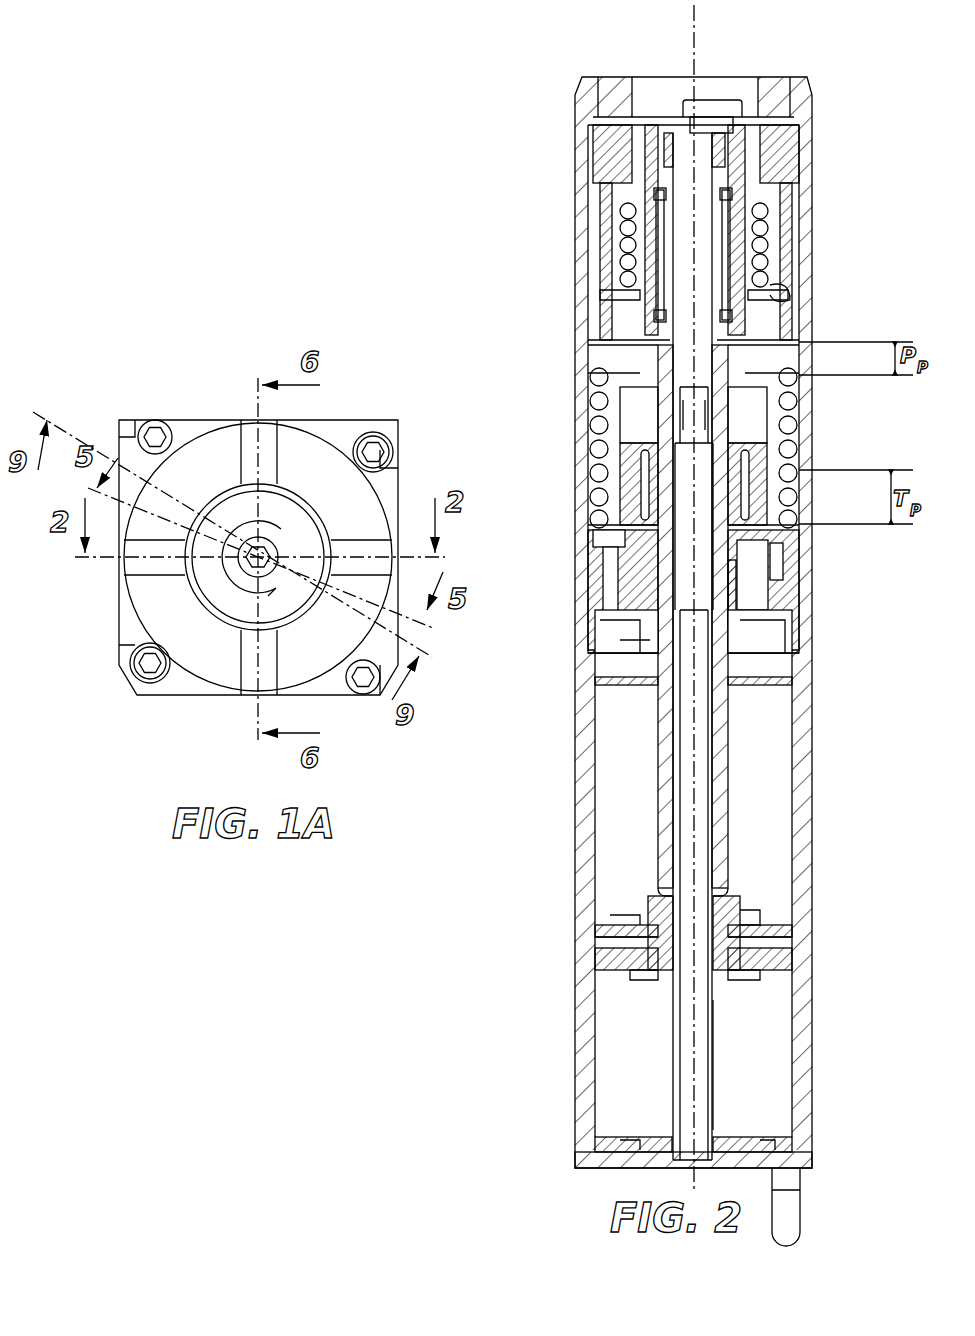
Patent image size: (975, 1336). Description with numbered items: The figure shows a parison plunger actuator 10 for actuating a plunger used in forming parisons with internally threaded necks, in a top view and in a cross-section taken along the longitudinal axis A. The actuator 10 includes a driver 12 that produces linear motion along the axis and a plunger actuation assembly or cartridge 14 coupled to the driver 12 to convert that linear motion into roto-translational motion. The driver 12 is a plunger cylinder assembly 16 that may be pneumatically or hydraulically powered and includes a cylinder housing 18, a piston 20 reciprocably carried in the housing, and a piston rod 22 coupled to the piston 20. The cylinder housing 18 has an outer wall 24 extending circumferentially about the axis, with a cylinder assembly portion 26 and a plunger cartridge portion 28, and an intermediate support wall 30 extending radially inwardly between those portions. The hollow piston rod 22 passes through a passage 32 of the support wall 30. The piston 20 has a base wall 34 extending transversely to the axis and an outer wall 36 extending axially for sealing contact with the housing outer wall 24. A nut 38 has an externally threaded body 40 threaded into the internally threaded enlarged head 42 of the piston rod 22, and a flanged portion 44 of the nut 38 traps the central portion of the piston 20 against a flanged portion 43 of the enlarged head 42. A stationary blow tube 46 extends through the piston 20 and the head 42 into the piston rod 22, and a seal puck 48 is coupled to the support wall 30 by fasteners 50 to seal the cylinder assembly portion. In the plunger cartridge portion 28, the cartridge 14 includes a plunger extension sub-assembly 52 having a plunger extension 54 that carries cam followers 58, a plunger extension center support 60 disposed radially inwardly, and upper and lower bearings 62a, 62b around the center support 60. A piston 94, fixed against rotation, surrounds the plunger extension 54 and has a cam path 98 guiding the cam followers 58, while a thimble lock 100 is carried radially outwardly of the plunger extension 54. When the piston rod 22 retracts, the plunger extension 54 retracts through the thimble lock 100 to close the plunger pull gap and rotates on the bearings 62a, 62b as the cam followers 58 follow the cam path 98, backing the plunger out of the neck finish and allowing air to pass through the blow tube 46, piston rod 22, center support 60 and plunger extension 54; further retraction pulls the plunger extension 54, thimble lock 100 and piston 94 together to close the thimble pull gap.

In FIG. 1A, the parison plunger actuator 10 is at (148, 358).
In FIG. 2, the parison plunger actuator 10 is at (520, 70).
In FIG. 2, the driver 12 is at (648, 622).
In FIG. 2, the plunger actuation assembly or cartridge 14 is at (802, 407).
In FIG. 2, the plunger cylinder assembly 16 is at (610, 1112).
In FIG. 2, the cylinder housing 18 is at (733, 622).
In FIG. 2, the piston 20 is at (756, 988).
In FIG. 2, the piston rod 22 is at (738, 729).
In FIG. 2, the outer wall 24 is at (818, 845).
In FIG. 2, the cylinder assembly portion 26 is at (553, 613).
In FIG. 2, the plunger cartridge portion 28 is at (565, 190).
In FIG. 2, the intermediate support wall 30 is at (768, 578).
In FIG. 2, the passage 32 is at (746, 598).
In FIG. 2, the base wall 34 is at (796, 945).
In FIG. 2, the outer wall 36 is at (796, 932).
In FIG. 2, the nut 38 is at (652, 988).
In FIG. 2, the externally threaded body 40 is at (730, 892).
In FIG. 2, the enlarged head 42 is at (650, 890).
In FIG. 2, the flanged portion 43 is at (762, 925).
In FIG. 2, the flanged portion 44 is at (636, 972).
In FIG. 2, the blow tube 46 is at (716, 1078).
In FIG. 2, the seal puck 48 is at (792, 642).
In FIG. 2, the fasteners 50 is at (610, 594).
In FIG. 2, the plunger extension sub-assembly 52 is at (650, 92).
In FIG. 2, the plunger extension 54 is at (744, 146).
In FIG. 2, the cam followers 58 is at (622, 300).
In FIG. 2, the plunger extension center support 60 is at (720, 232).
In FIG. 2, the upper bearing 62a is at (626, 204).
In FIG. 2, the lower bearing 62b is at (636, 320).
In FIG. 2, the piston 94 is at (775, 262).
In FIG. 2, the cam path 98 is at (790, 296).
In FIG. 2, the thimble lock 100 is at (764, 172).